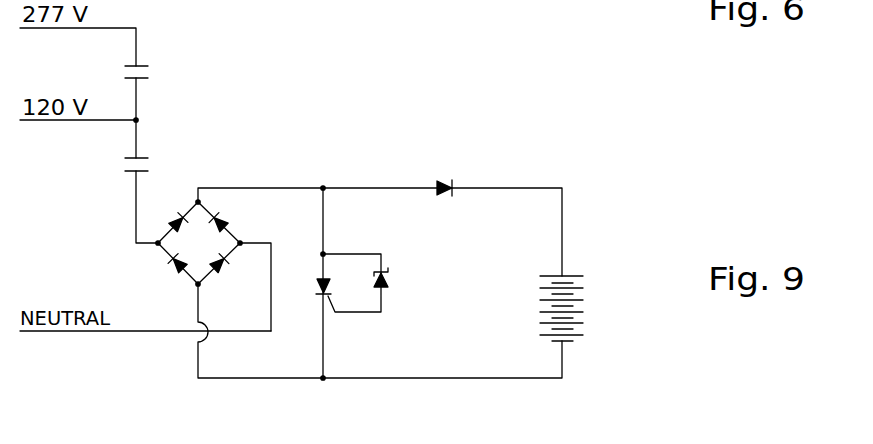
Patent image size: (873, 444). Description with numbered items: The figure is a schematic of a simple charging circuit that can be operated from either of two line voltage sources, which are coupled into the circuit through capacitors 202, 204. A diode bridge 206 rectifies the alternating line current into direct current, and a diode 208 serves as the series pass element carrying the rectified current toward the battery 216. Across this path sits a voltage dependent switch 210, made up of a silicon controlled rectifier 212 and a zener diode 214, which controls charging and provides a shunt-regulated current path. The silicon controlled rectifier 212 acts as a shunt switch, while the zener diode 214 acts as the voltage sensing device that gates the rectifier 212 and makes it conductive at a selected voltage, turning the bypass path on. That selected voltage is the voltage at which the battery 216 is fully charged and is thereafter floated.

The capacitor 202 is at (158, 58).
The capacitor 204 is at (157, 152).
The diode bridge 206 is at (157, 261).
The diode 208 is at (452, 160).
The voltage dependent switch 210 is at (315, 269).
The silicon controlled rectifier 212 is at (313, 298).
The zener diode 214 is at (393, 270).
The battery 216 is at (587, 265).